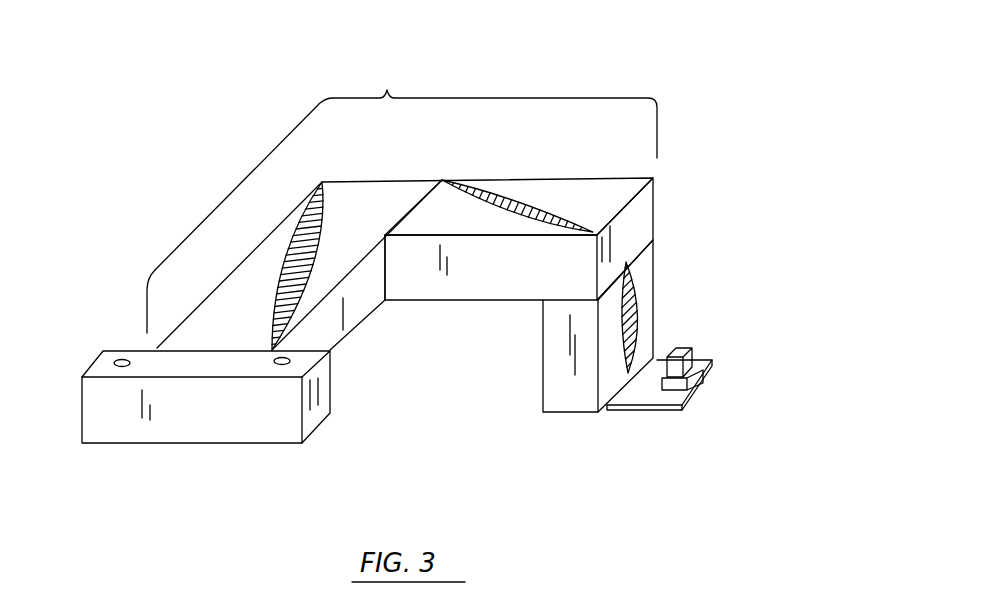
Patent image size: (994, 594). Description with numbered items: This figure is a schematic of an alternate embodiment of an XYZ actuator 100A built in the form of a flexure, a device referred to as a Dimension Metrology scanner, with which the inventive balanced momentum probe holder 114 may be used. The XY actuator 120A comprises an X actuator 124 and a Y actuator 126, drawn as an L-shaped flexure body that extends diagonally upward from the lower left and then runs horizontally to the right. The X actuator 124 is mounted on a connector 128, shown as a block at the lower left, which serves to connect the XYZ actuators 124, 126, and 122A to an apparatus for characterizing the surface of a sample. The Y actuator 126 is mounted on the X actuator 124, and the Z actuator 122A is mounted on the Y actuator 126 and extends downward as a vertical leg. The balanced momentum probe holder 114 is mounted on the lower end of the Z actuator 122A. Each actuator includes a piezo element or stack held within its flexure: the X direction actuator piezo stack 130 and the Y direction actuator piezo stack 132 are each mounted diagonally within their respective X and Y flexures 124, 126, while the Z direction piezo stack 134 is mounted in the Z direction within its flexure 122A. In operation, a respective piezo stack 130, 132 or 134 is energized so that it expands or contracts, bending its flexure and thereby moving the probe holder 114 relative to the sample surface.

The XYZ actuator 100A is at (690, 175).
The balanced momentum probe holder 114 is at (630, 425).
The XY actuator 120A is at (402, 197).
The Z actuator 122A is at (557, 377).
The X actuator 124 is at (343, 327).
The Y actuator 126 is at (647, 208).
The connector 128 is at (152, 420).
The X direction actuator piezo stack 130 is at (287, 242).
The Y direction actuator piezo stack 132 is at (492, 184).
The Z direction piezo stack 134 is at (630, 292).